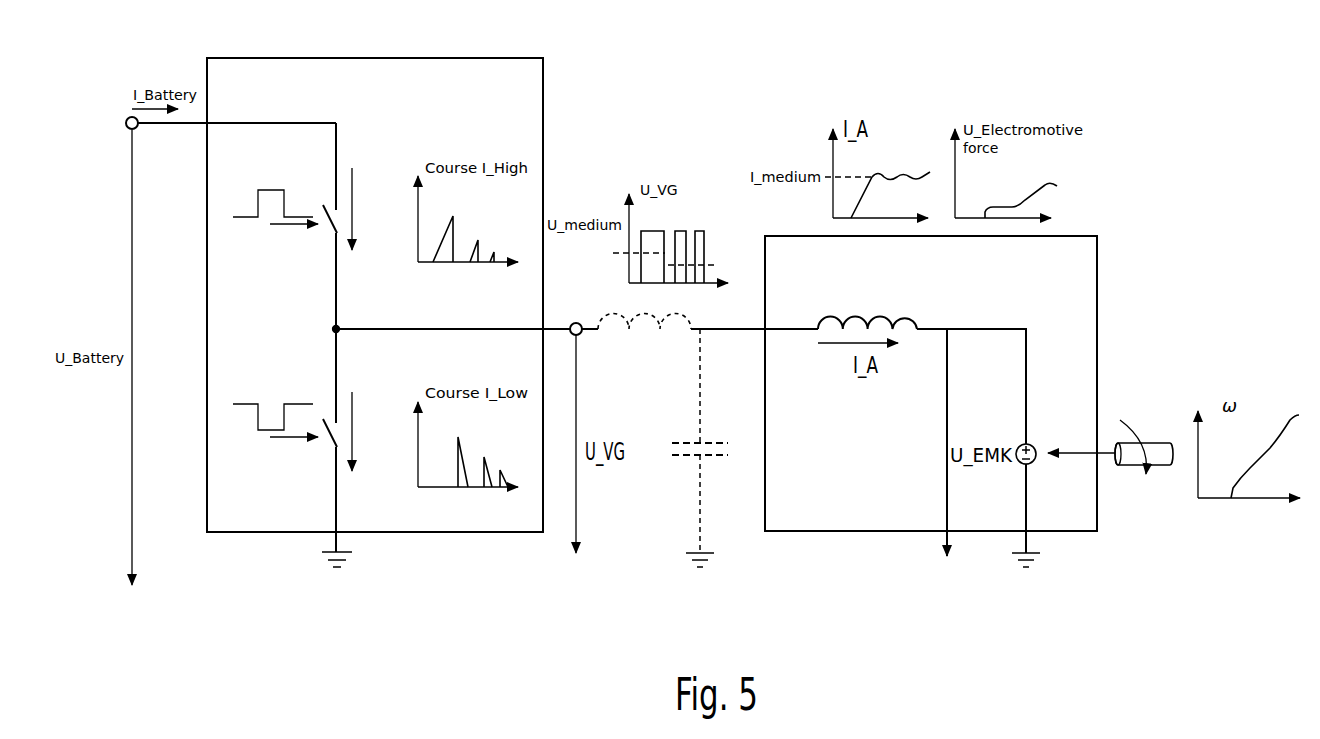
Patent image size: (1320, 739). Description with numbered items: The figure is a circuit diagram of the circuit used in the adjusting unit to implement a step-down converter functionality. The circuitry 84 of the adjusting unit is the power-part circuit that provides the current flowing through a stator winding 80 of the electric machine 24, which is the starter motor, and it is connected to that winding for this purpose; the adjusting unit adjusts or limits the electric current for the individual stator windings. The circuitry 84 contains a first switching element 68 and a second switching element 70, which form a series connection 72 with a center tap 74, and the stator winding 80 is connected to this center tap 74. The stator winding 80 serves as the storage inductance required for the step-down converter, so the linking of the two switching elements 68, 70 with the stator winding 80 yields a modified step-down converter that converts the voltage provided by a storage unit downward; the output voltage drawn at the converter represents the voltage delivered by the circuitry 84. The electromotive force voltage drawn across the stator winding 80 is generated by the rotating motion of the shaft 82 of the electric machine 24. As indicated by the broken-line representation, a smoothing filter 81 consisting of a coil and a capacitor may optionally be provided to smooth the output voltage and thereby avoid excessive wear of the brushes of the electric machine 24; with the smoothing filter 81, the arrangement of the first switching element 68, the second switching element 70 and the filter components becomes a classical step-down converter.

The circuitry 84 is at (309, 58).
The first switching element 68 is at (360, 132).
The second switching element 70 is at (279, 511).
The series connection 72 is at (279, 348).
The center tap 74 is at (340, 326).
The electric machine 24 is at (1100, 206).
The stator winding 80 is at (832, 310).
The smoothing filter 81 is at (675, 495).
The shaft 82 is at (1158, 465).